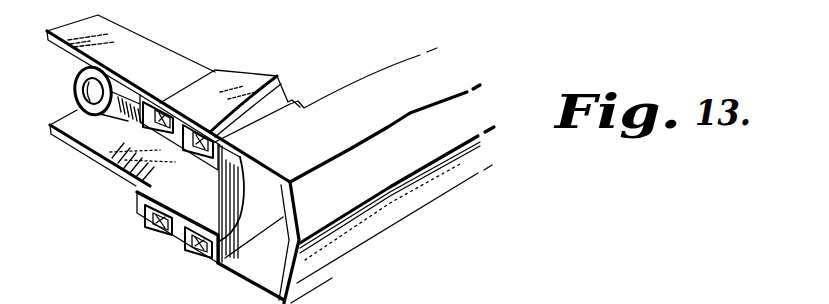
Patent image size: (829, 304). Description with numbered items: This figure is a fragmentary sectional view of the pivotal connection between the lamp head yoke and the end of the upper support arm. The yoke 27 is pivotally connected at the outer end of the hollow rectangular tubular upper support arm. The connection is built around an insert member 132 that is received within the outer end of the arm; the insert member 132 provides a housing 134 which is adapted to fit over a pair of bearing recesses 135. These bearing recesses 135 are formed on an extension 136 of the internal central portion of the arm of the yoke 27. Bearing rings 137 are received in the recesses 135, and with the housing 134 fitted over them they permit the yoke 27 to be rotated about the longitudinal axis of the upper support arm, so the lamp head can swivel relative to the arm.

The yoke 27 is at (437, 174).
The insert member 132 is at (132, 50).
The housing 134 is at (217, 78).
The bearing recesses 135 is at (172, 106).
The extension 136 is at (150, 194).
The bearing rings 137 is at (196, 246).